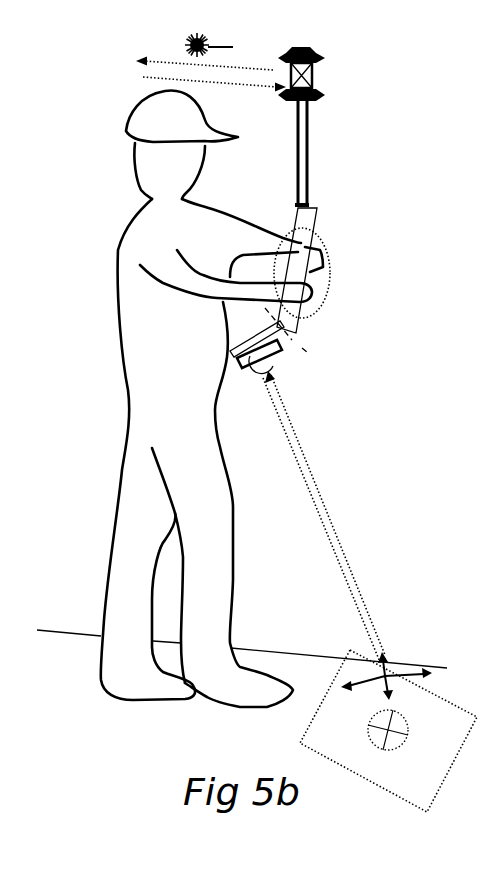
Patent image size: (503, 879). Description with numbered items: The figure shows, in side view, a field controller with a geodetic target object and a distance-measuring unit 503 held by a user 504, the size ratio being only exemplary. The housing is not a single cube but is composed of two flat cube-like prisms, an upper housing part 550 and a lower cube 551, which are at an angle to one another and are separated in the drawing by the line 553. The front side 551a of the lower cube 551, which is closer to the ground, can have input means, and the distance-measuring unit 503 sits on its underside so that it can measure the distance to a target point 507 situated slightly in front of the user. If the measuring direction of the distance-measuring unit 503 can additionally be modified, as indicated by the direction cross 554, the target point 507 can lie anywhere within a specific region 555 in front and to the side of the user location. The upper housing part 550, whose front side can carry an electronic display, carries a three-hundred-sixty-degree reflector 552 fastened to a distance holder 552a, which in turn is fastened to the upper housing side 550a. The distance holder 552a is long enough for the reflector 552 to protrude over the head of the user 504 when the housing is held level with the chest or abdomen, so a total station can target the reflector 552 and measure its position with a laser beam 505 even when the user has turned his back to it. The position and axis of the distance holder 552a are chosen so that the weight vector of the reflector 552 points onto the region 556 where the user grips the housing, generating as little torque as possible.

The distance-measuring unit 503 is at (275, 360).
The user 504 is at (145, 227).
The laser beam 505 is at (175, 53).
The target point 507 is at (370, 735).
The upper housing part 550 is at (307, 220).
The upper housing side 550a is at (308, 204).
The lower cube 551 is at (243, 347).
The front side of the lower cube 551a is at (257, 333).
The 360° reflector 552 is at (313, 78).
The distance holder 552a is at (308, 147).
The line 553 is at (308, 350).
The direction cross 554 is at (403, 668).
The region 555 is at (325, 695).
The region in which the user holds the housing 556 is at (330, 278).